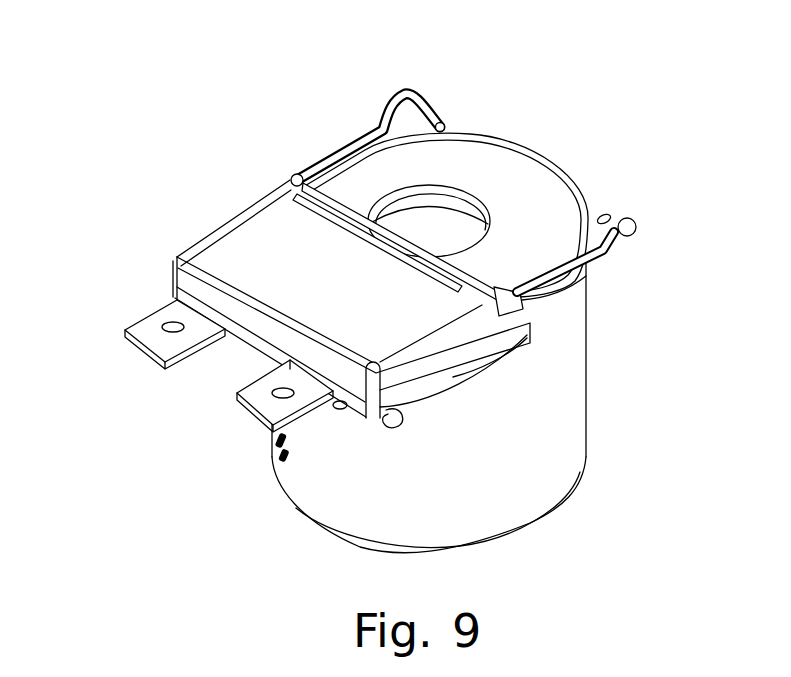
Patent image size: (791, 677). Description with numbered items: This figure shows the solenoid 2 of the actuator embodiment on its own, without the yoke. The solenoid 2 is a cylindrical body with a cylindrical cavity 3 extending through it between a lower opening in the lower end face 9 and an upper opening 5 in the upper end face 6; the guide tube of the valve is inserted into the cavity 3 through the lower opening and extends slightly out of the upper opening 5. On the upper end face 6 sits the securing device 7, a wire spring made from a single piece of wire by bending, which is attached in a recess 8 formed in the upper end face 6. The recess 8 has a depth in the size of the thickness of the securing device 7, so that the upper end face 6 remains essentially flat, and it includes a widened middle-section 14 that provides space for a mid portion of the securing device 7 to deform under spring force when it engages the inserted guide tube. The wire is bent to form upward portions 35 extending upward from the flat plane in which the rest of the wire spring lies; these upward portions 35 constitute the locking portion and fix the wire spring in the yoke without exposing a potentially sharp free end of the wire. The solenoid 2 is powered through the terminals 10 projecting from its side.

The solenoid 2 is at (570, 350).
The cylindrical cavity 3 is at (423, 243).
The upper opening 5 is at (432, 195).
The upper end face 6 is at (522, 175).
The securing device 7 is at (357, 133).
The recess 8 is at (440, 282).
The lower end face 9 is at (356, 548).
The terminals 10 is at (147, 323).
The widened middle-section 14 is at (367, 243).
The upward portions 35 is at (405, 90).